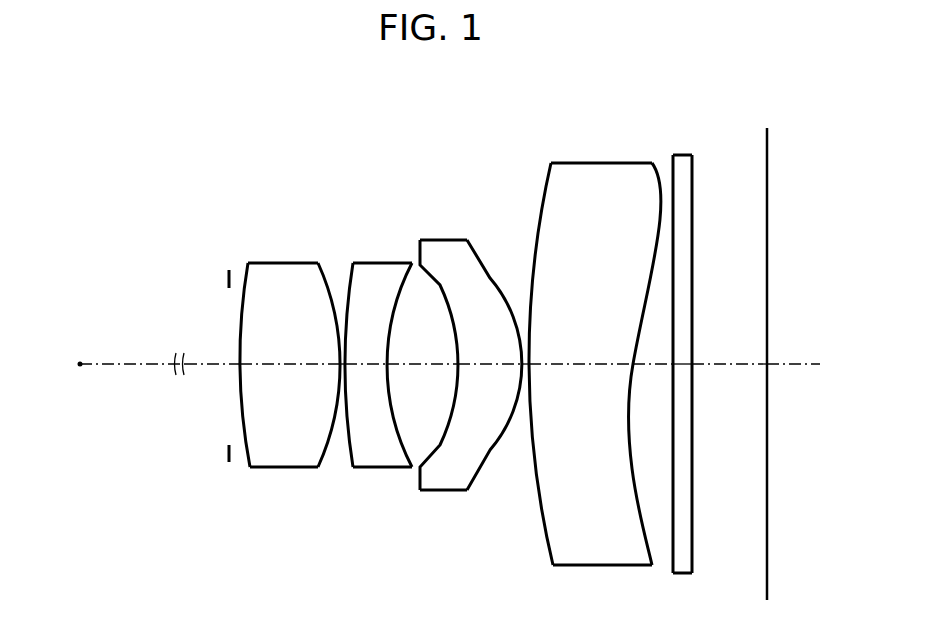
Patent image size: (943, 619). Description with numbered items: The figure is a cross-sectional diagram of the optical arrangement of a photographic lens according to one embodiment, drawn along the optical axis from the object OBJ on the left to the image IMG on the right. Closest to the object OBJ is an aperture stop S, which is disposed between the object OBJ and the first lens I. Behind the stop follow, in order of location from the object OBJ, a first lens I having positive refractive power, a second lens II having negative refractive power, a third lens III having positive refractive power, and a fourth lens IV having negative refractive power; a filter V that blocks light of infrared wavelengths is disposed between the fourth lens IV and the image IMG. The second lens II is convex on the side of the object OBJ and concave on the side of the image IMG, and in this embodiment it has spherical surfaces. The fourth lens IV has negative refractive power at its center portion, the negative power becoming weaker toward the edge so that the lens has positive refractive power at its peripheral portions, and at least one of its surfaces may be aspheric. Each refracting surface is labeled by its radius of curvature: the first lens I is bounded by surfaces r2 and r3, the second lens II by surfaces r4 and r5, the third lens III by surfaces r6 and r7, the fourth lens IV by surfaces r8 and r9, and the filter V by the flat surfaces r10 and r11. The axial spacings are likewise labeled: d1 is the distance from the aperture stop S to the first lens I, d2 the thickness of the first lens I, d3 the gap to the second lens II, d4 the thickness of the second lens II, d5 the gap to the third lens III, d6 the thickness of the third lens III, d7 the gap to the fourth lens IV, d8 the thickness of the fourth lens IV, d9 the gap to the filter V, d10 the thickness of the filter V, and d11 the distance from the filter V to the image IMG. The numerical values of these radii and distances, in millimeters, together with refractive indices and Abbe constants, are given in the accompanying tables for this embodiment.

The object OBJ is at (80, 362).
The aperture stop S is at (228, 282).
The image IMG is at (768, 163).
The first lens I is at (289, 312).
The second lens II is at (375, 317).
The third lens III is at (471, 314).
The fourth lens IV is at (595, 311).
The filter V is at (699, 315).
The radius of curvature of surface two r2 is at (246, 266).
The radius of curvature of surface three r3 is at (318, 263).
The radius of curvature of surface four r4 is at (352, 265).
The radius of curvature of surface five r5 is at (412, 263).
The radius of curvature of surface six r6 is at (428, 285).
The radius of curvature of surface seven r7 is at (498, 282).
The radius of curvature of surface eight r8 is at (541, 195).
The radius of curvature of surface nine r9 is at (655, 200).
The radius of curvature of surface ten r10 is at (676, 205).
The radius of curvature of surface eleven r11 is at (696, 205).
The distance from aperture stop to first lens d1 is at (225, 366).
The thickness of first lens d2 is at (280, 366).
The distance between first and second lenses d3 is at (343, 366).
The thickness of second lens d4 is at (366, 366).
The distance between second and third lenses d5 is at (418, 366).
The thickness of third lens d6 is at (482, 366).
The distance between third and fourth lenses d7 is at (520, 368).
The thickness of fourth lens d8 is at (592, 366).
The distance between fourth lens and filter d9 is at (650, 366).
The thickness of filter d10 is at (685, 366).
The distance between filter and image d11 is at (748, 366).